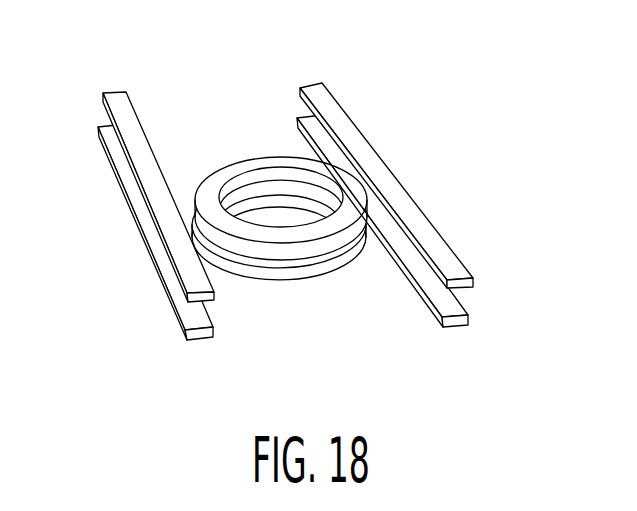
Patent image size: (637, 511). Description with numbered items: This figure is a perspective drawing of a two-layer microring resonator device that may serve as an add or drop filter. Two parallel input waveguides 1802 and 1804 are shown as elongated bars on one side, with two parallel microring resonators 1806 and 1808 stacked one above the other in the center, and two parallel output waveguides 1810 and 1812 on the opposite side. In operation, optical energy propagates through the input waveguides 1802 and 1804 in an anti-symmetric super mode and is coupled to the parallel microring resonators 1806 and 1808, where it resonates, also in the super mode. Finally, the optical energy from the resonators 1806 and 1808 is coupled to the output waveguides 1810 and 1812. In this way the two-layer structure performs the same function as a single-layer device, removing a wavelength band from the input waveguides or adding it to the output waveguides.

The input waveguide 1802 is at (120, 98).
The input waveguide 1804 is at (100, 127).
The microring resonator 1806 is at (228, 172).
The microring resonator 1808 is at (290, 270).
The output waveguide 1810 is at (335, 110).
The output waveguide 1812 is at (458, 305).